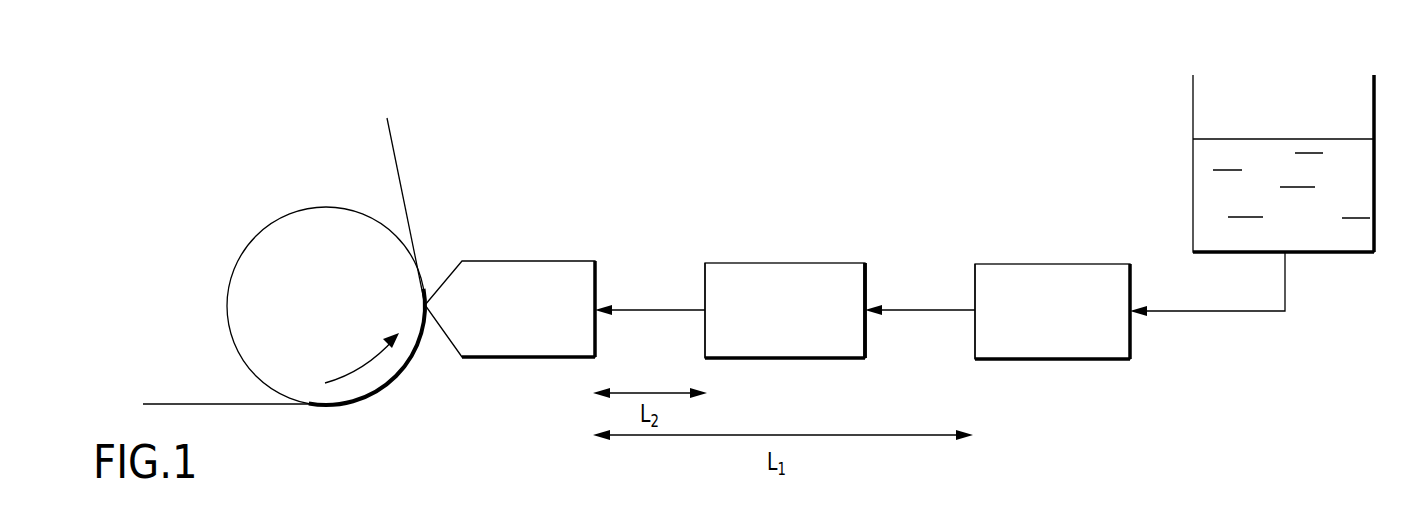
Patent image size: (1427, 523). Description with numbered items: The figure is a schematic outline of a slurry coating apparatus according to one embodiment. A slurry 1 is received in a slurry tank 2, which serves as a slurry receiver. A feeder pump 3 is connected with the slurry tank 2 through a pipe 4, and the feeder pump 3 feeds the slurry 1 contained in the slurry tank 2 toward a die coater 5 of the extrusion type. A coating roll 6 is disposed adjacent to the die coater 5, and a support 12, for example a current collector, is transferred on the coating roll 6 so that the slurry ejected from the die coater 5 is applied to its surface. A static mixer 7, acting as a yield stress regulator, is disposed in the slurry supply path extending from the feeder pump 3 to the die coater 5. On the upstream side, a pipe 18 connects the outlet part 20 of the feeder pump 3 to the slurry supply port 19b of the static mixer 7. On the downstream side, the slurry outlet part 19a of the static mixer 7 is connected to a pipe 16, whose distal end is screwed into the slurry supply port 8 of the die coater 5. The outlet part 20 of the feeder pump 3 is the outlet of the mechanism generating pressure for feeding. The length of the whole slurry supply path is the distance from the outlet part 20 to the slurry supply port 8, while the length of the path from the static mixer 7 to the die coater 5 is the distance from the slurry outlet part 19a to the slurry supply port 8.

The slurry 1 is at (1363, 178).
The slurry tank 2 is at (1363, 107).
The feeder pump 3 is at (1067, 361).
The pipe 4 is at (1258, 313).
The die coater 5 is at (527, 359).
The coating roll 6 is at (262, 245).
The static mixer 7 is at (790, 360).
The slurry supply port 8 is at (596, 302).
The support 12 is at (398, 163).
The pipe 16 is at (655, 308).
The pipe 18 is at (918, 308).
The slurry outlet part 19a is at (705, 302).
The slurry supply port 19b is at (866, 302).
The outlet part 20 is at (975, 305).